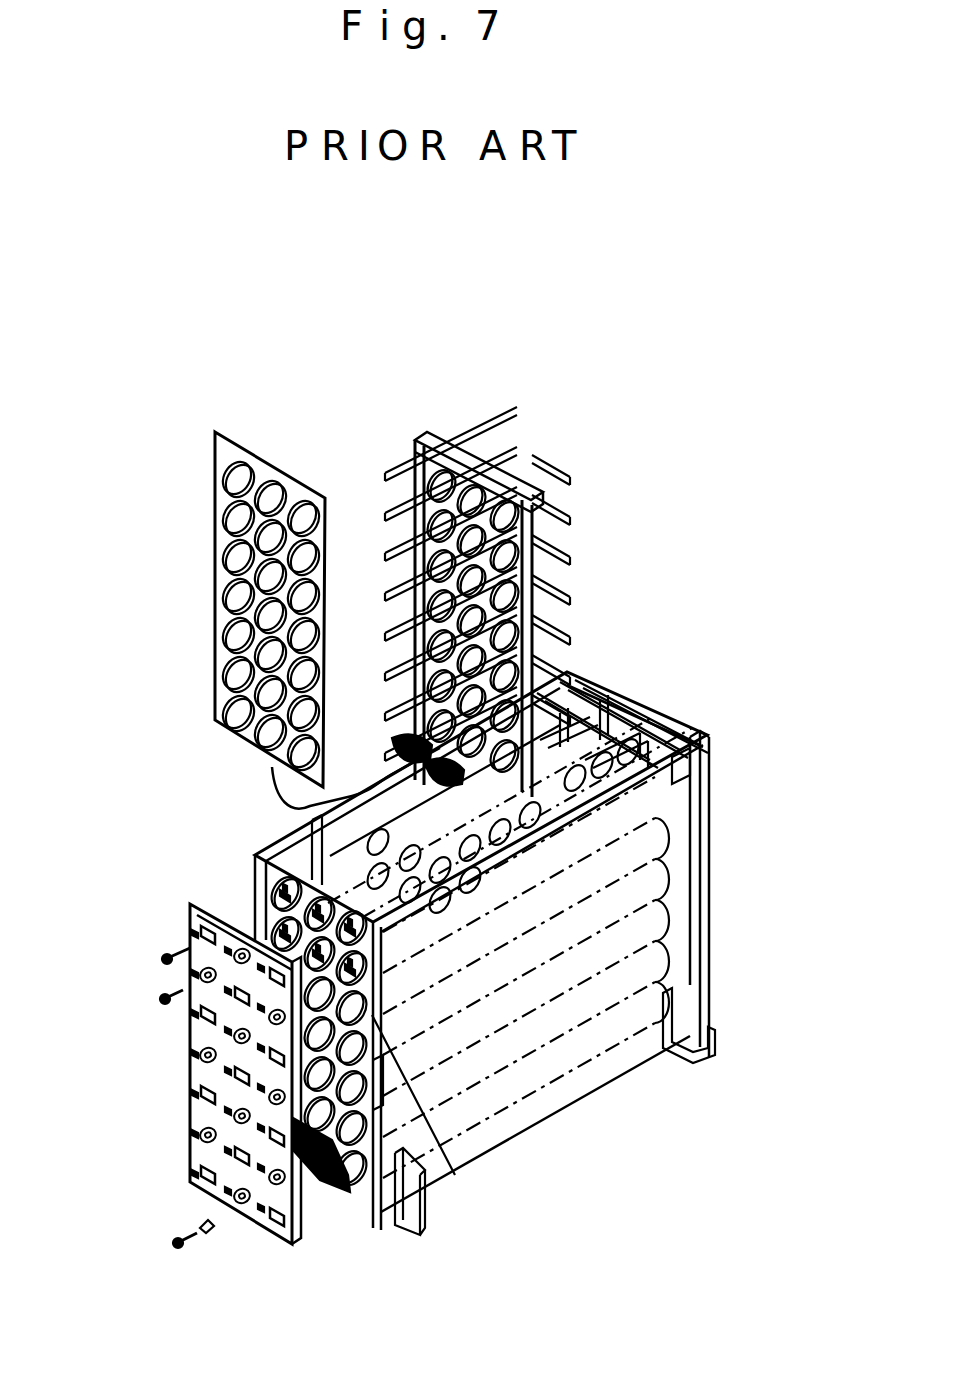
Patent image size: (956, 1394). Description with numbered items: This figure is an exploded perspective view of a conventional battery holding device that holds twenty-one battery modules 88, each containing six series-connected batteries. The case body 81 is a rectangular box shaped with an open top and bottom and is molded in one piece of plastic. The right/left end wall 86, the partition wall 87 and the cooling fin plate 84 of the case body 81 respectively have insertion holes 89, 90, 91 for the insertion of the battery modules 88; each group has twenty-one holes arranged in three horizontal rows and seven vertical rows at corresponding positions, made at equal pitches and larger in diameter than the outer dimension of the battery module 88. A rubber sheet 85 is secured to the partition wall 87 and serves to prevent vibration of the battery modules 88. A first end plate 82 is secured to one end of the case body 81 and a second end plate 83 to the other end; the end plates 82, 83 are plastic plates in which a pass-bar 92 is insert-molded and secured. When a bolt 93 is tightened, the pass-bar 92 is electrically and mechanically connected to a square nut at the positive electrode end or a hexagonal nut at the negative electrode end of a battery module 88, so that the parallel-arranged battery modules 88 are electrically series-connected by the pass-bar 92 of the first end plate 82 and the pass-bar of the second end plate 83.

The case body 81 is at (528, 1070).
The first end plate 82 is at (255, 1223).
The second end plate 83 is at (703, 840).
The cooling fin plate 84 is at (480, 430).
The rubber sheet 85 is at (262, 460).
The right/left end wall 86 is at (258, 858).
The partition wall 87 is at (660, 920).
The battery module 88 is at (527, 1065).
The insertion hole 89 is at (448, 1077).
The insertion hole 90 is at (423, 857).
The insertion hole 91 is at (240, 1158).
The pass-bar 92 is at (207, 937).
The bolt 93 is at (160, 960).